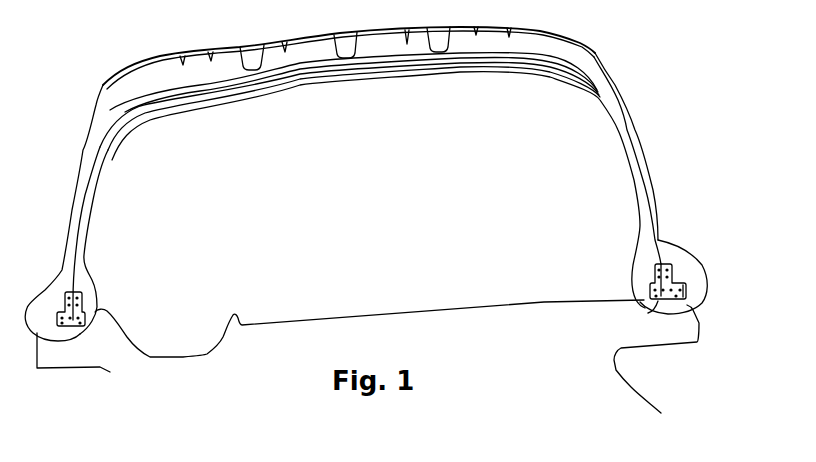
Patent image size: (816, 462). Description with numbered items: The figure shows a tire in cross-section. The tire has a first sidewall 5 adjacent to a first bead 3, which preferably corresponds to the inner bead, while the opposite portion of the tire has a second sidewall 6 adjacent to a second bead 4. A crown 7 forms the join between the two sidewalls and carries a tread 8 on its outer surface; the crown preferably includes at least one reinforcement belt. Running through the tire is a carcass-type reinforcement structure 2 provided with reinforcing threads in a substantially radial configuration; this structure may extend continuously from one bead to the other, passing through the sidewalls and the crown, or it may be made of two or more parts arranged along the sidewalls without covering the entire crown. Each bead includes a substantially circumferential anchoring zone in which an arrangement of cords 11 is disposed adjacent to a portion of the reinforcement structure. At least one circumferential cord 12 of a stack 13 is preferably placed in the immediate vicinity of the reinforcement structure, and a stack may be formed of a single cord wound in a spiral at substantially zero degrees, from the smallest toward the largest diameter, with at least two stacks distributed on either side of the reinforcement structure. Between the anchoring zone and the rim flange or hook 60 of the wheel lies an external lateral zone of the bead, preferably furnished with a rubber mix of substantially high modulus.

The carcass-type reinforcement structure 2 is at (641, 194).
The first bead 3 is at (88, 281).
The second bead 4 is at (632, 247).
The first sidewall 5 is at (86, 197).
The second sidewall 6 is at (638, 147).
The crown 7 is at (357, 78).
The tread 8 is at (441, 31).
The arrangements of cords 11 is at (680, 282).
The circumferential cord 12 is at (665, 264).
The stack 13 is at (662, 305).
The rim flange or hook 60 is at (368, 356).